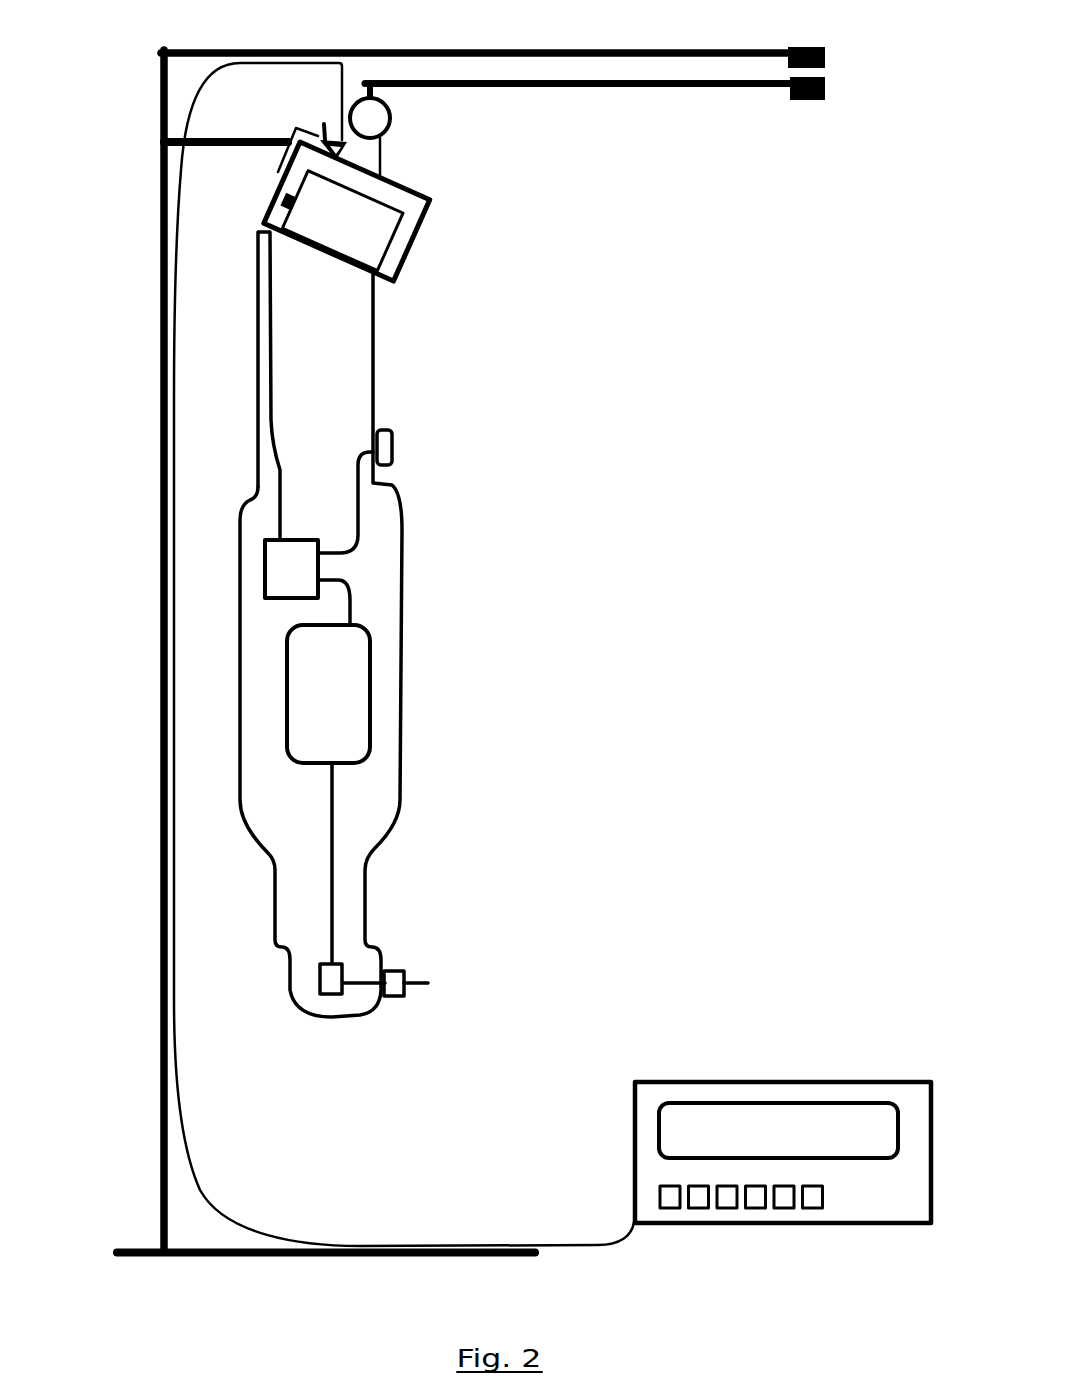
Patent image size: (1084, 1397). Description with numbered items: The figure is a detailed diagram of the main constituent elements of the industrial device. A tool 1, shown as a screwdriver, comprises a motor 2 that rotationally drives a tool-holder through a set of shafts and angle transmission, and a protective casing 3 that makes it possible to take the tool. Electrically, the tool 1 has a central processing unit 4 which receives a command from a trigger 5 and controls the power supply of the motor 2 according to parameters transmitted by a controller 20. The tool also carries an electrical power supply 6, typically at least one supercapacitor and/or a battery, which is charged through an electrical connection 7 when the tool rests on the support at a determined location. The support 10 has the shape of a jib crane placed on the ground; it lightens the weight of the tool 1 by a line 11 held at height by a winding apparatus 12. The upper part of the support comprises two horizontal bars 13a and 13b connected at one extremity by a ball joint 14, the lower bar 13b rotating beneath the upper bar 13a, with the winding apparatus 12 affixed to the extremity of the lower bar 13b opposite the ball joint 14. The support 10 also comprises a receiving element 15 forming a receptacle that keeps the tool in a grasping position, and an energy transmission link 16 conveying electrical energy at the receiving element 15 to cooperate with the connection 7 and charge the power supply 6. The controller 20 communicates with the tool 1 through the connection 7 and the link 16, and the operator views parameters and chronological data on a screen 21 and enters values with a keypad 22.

The tool 1 is at (455, 622).
The motor 2 is at (345, 727).
The protective casing 3 is at (237, 705).
The central processing unit 4 is at (280, 570).
The trigger 5 is at (392, 440).
The electrical power supply 6 is at (382, 228).
The electrical connection 7 is at (278, 171).
The support 10 is at (150, 648).
The line 11 is at (382, 157).
The winding apparatus 12 is at (393, 117).
The upper bar 13a is at (732, 57).
The lower bar 13b is at (667, 87).
The ball joint 14 is at (808, 100).
The receiving element 15 is at (280, 157).
The energy transmission link 16 is at (327, 137).
The controller 20 is at (781, 1058).
The screen 21 is at (835, 1130).
The keypad 22 is at (668, 1200).